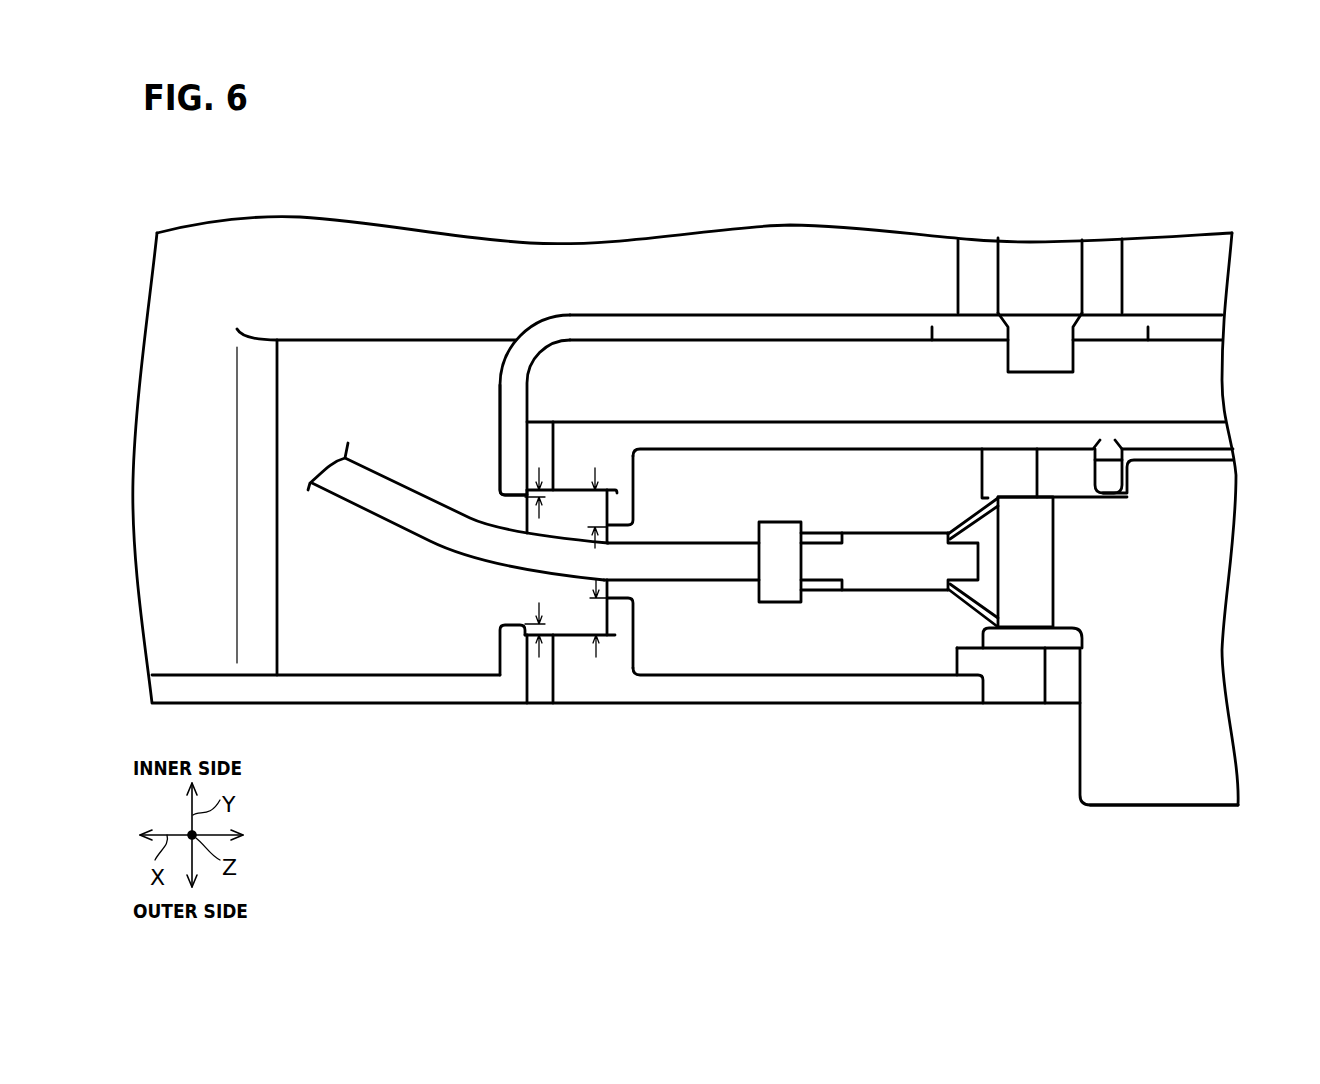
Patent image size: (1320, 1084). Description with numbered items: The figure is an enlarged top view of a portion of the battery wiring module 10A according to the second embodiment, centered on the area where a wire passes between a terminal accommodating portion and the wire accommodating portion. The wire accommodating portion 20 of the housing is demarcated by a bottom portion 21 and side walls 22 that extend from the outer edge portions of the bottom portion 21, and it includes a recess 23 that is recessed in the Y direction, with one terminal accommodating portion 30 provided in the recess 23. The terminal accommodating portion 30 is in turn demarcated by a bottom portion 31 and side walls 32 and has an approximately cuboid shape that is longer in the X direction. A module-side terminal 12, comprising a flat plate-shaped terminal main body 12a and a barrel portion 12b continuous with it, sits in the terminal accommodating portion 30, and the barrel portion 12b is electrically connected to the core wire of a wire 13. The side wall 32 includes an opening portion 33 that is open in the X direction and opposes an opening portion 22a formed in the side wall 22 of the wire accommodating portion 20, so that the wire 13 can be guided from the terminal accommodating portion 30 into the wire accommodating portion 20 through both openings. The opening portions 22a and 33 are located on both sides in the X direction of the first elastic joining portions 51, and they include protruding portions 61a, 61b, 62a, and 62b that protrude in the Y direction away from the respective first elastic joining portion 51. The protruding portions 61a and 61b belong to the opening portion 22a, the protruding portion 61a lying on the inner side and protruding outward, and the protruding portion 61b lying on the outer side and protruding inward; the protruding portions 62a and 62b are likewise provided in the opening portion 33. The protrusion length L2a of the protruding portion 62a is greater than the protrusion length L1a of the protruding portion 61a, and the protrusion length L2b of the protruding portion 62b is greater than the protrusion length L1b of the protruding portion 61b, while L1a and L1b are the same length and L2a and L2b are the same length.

The battery wiring module 10A is at (427, 722).
The module-side terminal 12 is at (1105, 793).
The terminal main body 12a is at (1162, 792).
The barrel portion 12b is at (873, 582).
The wire 13 is at (377, 477).
The wire accommodating portion 20 is at (1197, 252).
The bottom portion 21 is at (1215, 270).
The side wall 22 is at (1213, 327).
The opening portion 22a is at (512, 626).
The recess 23 is at (885, 347).
The terminal accommodating portion 30 is at (933, 428).
The bottom portion 31 is at (800, 463).
The side wall 32 is at (1088, 427).
The opening portion 33 is at (612, 572).
The first elastic joining portion 51 is at (585, 437).
The protruding portion 61a is at (522, 499).
The protruding portion 61b is at (505, 630).
The protruding portion 62a is at (620, 533).
The protruding portion 62b is at (628, 603).
The protrusion length L1a is at (527, 492).
The protrusion length L1b is at (527, 633).
The protrusion length L2a is at (620, 494).
The protrusion length L2b is at (612, 626).